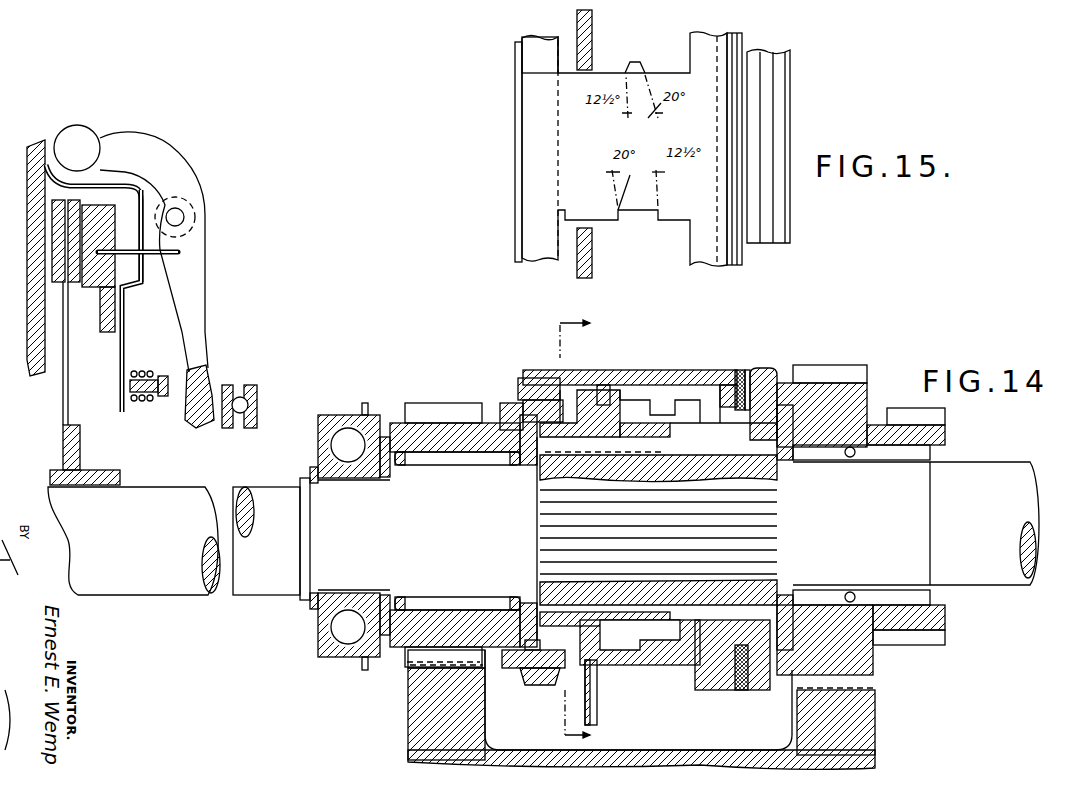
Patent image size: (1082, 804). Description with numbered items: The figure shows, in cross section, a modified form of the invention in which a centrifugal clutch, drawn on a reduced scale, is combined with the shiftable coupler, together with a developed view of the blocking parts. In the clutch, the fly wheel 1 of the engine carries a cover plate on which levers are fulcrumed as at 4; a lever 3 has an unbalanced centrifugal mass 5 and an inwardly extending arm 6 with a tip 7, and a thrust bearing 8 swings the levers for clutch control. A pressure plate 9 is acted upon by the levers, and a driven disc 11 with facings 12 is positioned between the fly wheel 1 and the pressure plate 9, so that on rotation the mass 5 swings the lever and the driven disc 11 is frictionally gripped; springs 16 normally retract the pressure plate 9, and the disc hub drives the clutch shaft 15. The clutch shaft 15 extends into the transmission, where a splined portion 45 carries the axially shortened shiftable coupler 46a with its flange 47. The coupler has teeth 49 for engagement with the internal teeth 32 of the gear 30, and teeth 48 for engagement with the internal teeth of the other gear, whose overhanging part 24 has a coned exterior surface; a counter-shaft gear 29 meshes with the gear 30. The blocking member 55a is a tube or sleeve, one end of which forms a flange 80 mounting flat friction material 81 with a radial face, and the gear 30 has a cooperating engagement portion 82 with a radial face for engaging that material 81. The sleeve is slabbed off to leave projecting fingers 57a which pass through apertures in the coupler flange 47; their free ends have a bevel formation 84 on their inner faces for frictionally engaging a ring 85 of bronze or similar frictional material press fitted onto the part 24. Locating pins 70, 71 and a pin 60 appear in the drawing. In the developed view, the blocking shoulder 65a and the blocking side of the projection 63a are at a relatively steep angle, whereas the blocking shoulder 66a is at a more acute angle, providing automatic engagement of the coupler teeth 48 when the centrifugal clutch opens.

In FIG. 14, the fly wheel 1 is at (38, 226).
In FIG. 14, the clutch lever 3 is at (207, 246).
In FIG. 14, the lever fulcrum 4 is at (182, 212).
In FIG. 14, the unbalanced centrifugal mass 5 is at (80, 138).
In FIG. 14, the inwardly extending arm 6 is at (198, 321).
In FIG. 14, the tip 7 is at (205, 425).
In FIG. 14, the thrust bearing 8 is at (250, 388).
In FIG. 14, the pressure plate 9 is at (92, 279).
In FIG. 14, the driven disc 11 is at (62, 392).
In FIG. 14, the facings 12 is at (52, 187).
In FIG. 14, the clutch shaft 15 is at (288, 565).
In FIG. 14, the springs 16 is at (148, 400).
In FIG. 14, the overhanging part 24 is at (515, 662).
In FIG. 14, the gear 29 is at (855, 716).
In FIG. 14, the gear 30 is at (838, 392).
In FIG. 14, the internal teeth 32 is at (777, 688).
In FIG. 14, the splined shaft 45 is at (745, 506).
In FIG. 14, the shiftable coupler 46a is at (535, 478).
In FIG. 14, the flange 47 is at (598, 708).
In FIG. 14, the teeth 48 is at (560, 670).
In FIG. 14, the teeth 49 is at (668, 640).
In FIG. 14, the blocking member 55a is at (738, 372).
In FIG. 15, the projecting fingers 57a is at (537, 148).
In FIG. 14, the projecting fingers 57a is at (627, 370).
In FIG. 14, the pin 60 is at (603, 388).
In FIG. 15, the projection 63a is at (637, 62).
In FIG. 15, the blocking shoulder 65a is at (657, 227).
In FIG. 15, the blocking shoulder 66a is at (620, 228).
In FIG. 15, the pin 70 is at (584, 40).
In FIG. 15, the pin 71 is at (583, 240).
In FIG. 14, the flange 80 is at (720, 403).
In FIG. 15, the friction material 81 is at (738, 40).
In FIG. 14, the friction material 81 is at (746, 365).
In FIG. 15, the engagement portion 82 is at (755, 96).
In FIG. 14, the engagement portion 82 is at (758, 366).
In FIG. 14, the bevel formation 84 is at (548, 378).
In FIG. 15, the ring of frictional material 85 is at (530, 55).
In FIG. 14, the ring of frictional material 85 is at (518, 393).